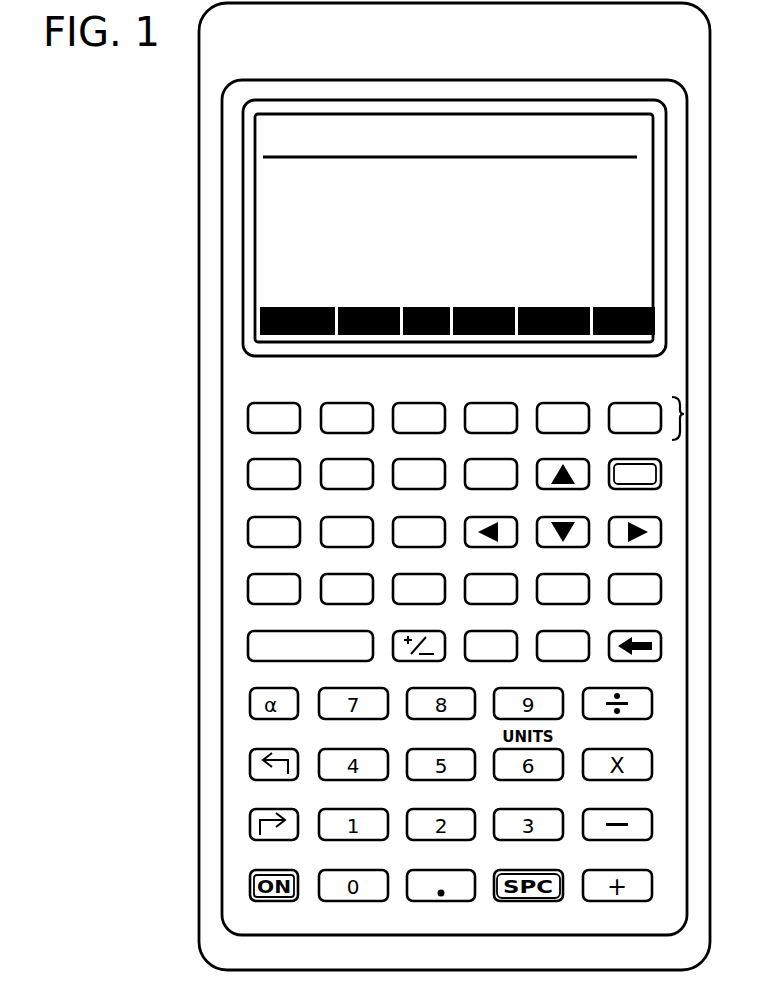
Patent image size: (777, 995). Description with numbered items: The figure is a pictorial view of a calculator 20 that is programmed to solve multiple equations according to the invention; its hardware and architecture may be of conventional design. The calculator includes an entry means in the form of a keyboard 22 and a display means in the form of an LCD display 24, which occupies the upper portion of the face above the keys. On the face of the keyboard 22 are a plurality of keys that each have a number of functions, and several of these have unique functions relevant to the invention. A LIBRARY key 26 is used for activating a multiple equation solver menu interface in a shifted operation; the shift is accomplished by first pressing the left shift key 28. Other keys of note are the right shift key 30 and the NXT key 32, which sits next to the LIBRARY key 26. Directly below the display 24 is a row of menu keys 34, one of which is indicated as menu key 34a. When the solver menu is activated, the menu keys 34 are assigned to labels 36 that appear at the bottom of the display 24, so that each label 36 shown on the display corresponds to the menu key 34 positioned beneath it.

The calculator 20 is at (98, 132).
The keyboard 22 is at (445, 526).
The LCD display 24 is at (423, 92).
The LIBRARY key 26 is at (589, 459).
The left shift key 28 is at (250, 766).
The right shift key 30 is at (250, 826).
The NXT key 32 is at (661, 473).
The row of menu keys 34 is at (684, 414).
The menu key 34a is at (490, 403).
The labels 36 is at (658, 322).